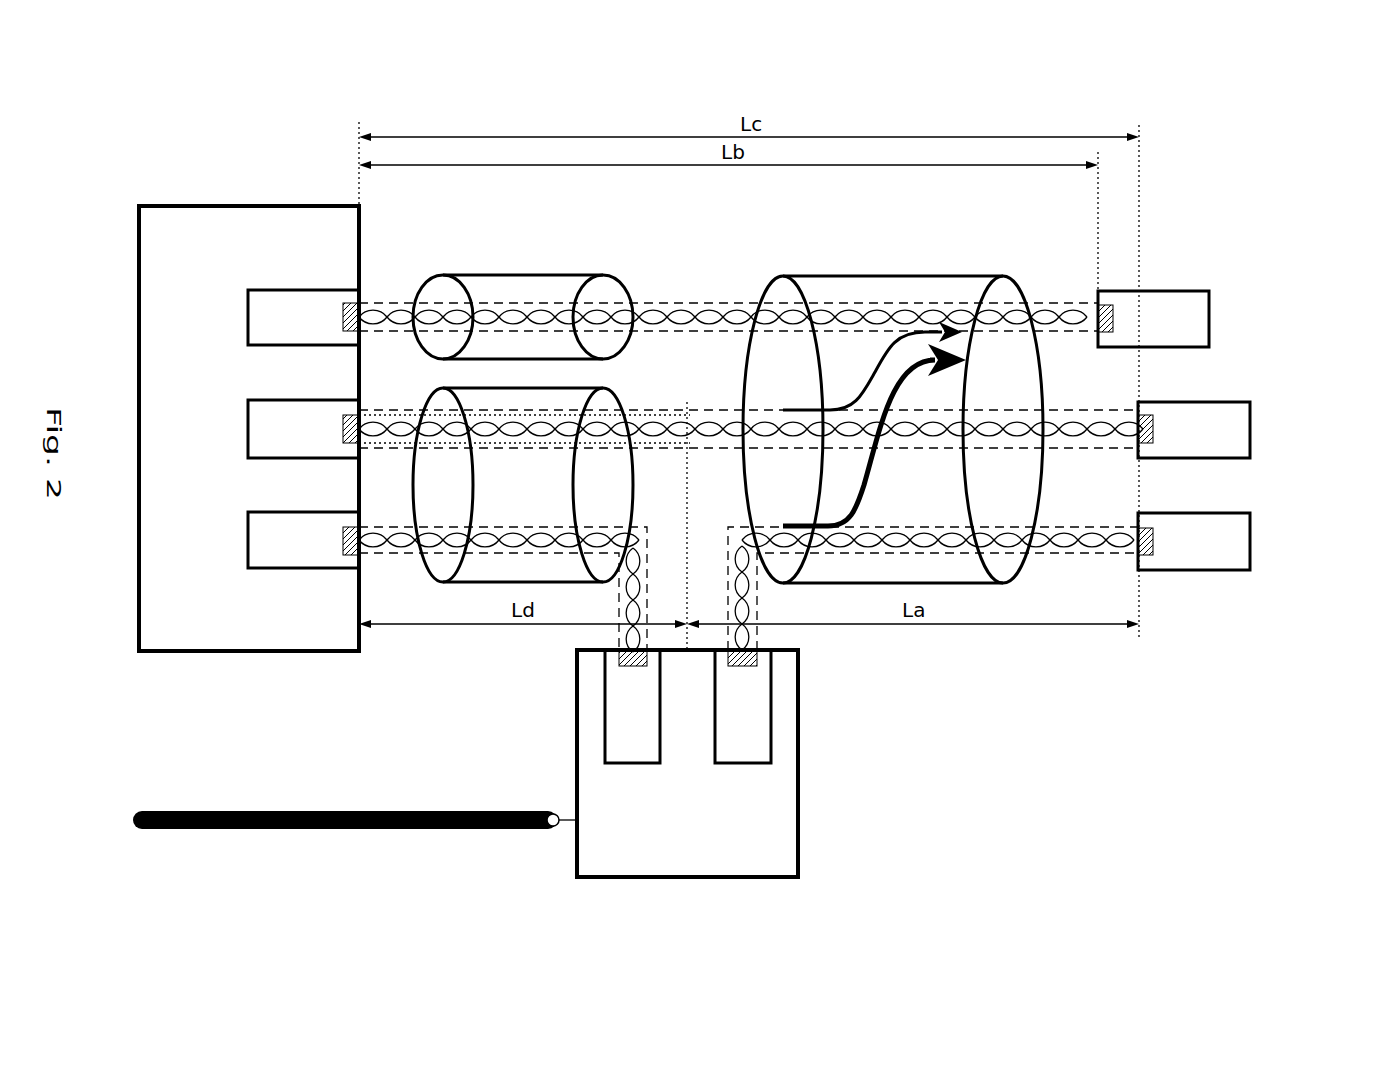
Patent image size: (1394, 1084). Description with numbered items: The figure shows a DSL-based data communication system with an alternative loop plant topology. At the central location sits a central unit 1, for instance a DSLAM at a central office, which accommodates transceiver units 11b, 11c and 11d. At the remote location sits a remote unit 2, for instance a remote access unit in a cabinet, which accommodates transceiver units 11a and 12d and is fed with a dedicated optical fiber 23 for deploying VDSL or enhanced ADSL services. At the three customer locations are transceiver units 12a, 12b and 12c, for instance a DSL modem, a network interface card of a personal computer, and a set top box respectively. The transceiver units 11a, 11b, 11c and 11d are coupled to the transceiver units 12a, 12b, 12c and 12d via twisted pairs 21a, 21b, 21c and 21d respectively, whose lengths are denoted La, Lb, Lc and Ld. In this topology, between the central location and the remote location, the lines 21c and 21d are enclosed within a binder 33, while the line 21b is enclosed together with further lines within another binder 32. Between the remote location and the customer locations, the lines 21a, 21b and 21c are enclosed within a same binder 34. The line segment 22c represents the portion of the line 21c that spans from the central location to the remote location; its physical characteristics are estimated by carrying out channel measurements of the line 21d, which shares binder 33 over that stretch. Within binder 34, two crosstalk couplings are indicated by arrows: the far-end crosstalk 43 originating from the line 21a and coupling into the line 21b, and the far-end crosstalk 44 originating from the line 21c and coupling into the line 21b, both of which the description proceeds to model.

The central unit 1 is at (359, 651).
The remote unit 2 is at (798, 877).
The transceiver unit 11a is at (742, 764).
The transceiver unit 11b is at (248, 317).
The transceiver unit 11c is at (248, 429).
The transceiver unit 11d is at (248, 540).
The transceiver unit 12a is at (1250, 541).
The transceiver unit 12b is at (1209, 319).
The transceiver unit 12c is at (1250, 429).
The transceiver unit 12d is at (633, 764).
The twisted pair 21a is at (1068, 525).
The twisted pair 21b is at (1066, 302).
The twisted pair 21c is at (1068, 410).
The twisted pair 21d is at (383, 558).
The line segment 22c is at (379, 412).
The optical fiber 23 is at (358, 830).
The binder 32 is at (517, 274).
The binder 33 is at (634, 485).
The binder 34 is at (901, 274).
The far-end crosstalk 43 is at (864, 487).
The far-end crosstalk 44 is at (880, 350).